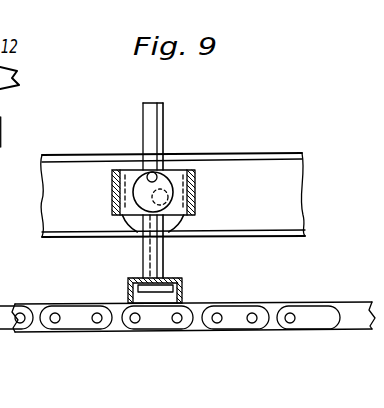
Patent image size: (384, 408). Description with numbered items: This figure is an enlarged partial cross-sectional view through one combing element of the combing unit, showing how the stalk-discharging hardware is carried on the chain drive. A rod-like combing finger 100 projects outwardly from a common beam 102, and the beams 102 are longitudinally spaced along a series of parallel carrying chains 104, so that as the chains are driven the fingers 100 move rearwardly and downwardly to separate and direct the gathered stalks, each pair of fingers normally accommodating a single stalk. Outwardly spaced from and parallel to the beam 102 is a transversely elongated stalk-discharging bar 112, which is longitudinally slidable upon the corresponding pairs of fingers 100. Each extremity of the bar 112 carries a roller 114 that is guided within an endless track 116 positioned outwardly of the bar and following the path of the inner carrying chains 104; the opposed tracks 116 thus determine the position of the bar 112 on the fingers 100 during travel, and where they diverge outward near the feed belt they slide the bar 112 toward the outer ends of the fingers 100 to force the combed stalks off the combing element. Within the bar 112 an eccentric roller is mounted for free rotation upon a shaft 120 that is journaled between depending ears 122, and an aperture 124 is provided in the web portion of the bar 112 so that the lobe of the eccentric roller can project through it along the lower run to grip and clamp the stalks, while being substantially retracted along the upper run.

The combing fingers 100 is at (162, 113).
The beam 102 is at (183, 297).
The carrying chains 104 is at (234, 311).
The stalk-discharging bar 112 is at (195, 201).
The roller 114 is at (138, 220).
The endless track 116 is at (271, 197).
The shaft 120 is at (158, 172).
The depending ears 122 is at (196, 178).
The aperture 124 is at (132, 172).